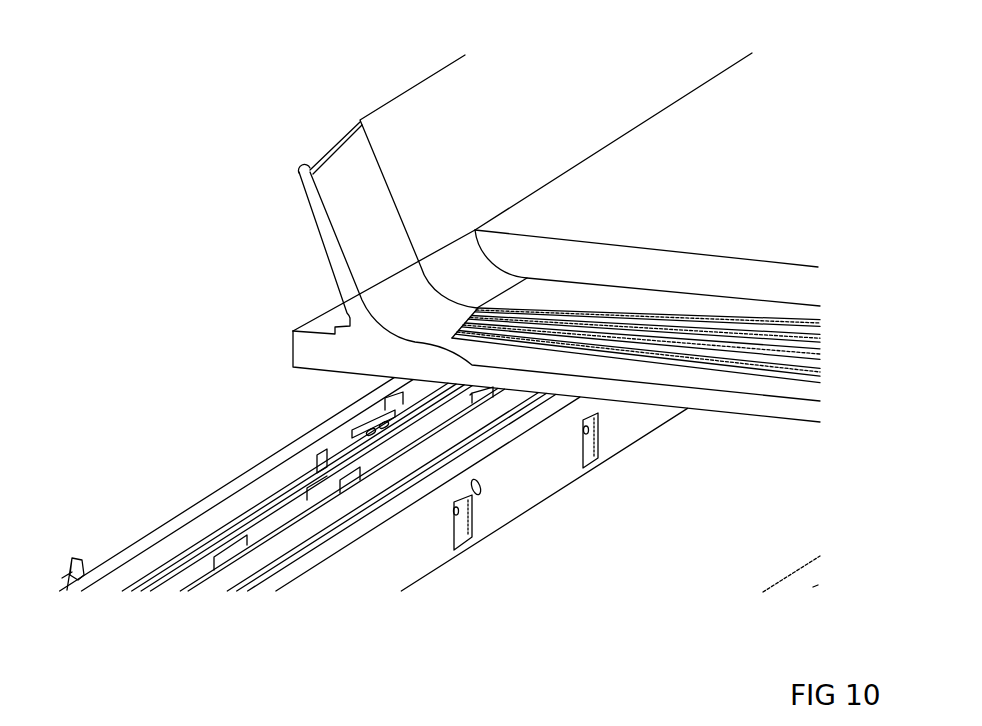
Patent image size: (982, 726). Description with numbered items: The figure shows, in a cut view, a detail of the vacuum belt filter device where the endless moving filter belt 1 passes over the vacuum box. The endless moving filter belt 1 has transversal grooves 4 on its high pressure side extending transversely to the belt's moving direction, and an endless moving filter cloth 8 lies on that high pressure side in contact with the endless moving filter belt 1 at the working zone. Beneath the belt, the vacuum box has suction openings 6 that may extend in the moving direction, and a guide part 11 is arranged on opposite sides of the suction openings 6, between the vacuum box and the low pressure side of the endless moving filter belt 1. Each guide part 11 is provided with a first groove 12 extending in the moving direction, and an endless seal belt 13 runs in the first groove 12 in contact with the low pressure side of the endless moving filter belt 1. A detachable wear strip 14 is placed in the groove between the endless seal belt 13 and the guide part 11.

The endless moving filter belt 1 is at (317, 323).
The transversal grooves 4 is at (806, 372).
The suction openings 6 is at (330, 455).
The endless moving filter cloth 8 is at (396, 106).
The guide part 11 is at (236, 487).
The first groove 12 is at (314, 500).
The endless seal belt 13 is at (198, 532).
The detachable wear strip 14 is at (374, 420).